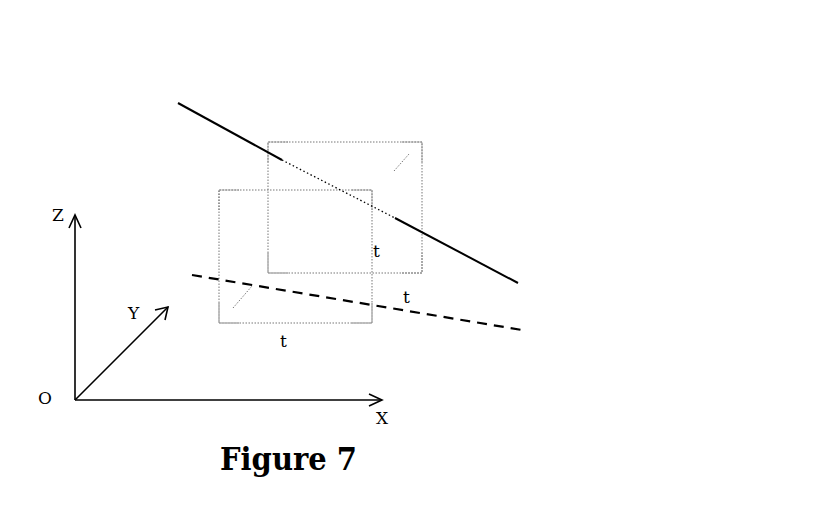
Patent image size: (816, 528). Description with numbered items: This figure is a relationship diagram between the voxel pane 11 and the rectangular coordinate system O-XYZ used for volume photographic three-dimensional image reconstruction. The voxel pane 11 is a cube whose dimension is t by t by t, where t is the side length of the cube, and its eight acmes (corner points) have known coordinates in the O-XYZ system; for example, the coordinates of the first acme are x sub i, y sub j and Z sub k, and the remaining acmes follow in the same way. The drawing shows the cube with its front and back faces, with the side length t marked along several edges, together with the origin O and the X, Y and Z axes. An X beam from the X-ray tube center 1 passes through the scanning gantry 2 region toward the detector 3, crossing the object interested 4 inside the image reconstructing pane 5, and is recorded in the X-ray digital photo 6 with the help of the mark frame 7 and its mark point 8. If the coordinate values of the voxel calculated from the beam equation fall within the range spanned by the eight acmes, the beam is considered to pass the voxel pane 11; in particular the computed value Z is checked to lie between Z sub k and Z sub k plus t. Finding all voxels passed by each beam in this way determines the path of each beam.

The voxel pane 11 is at (352, 157).
The X-ray tube center 1 is at (208, 322).
The scanning gantry 2 is at (378, 328).
The detector 3 is at (433, 274).
The object interested 4 is at (286, 274).
The image reconstructing pane 5 is at (207, 197).
The X-ray digital photo 6 is at (385, 202).
The mark frame 7 is at (429, 153).
The mark point 8 is at (255, 143).